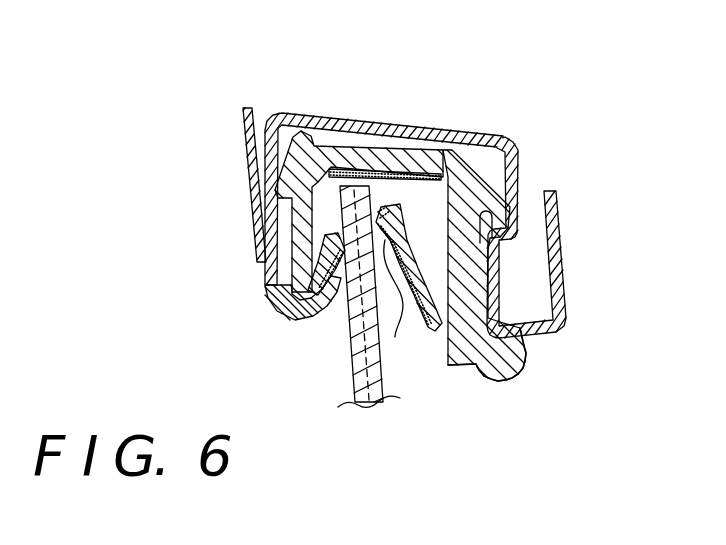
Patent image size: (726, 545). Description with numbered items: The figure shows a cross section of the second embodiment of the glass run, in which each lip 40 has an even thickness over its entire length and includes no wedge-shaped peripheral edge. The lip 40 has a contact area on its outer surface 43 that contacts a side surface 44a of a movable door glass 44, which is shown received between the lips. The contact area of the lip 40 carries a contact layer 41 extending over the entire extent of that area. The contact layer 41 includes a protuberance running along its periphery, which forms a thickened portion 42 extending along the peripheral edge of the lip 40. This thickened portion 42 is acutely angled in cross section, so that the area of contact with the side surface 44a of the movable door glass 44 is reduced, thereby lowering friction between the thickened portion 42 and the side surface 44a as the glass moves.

The lip 40 is at (305, 257).
The contact layer 41 is at (418, 330).
The thickened portion 42 is at (347, 272).
The outer surface 43 is at (292, 292).
The movable door glass 44 is at (374, 404).
The side surface 44a is at (378, 192).